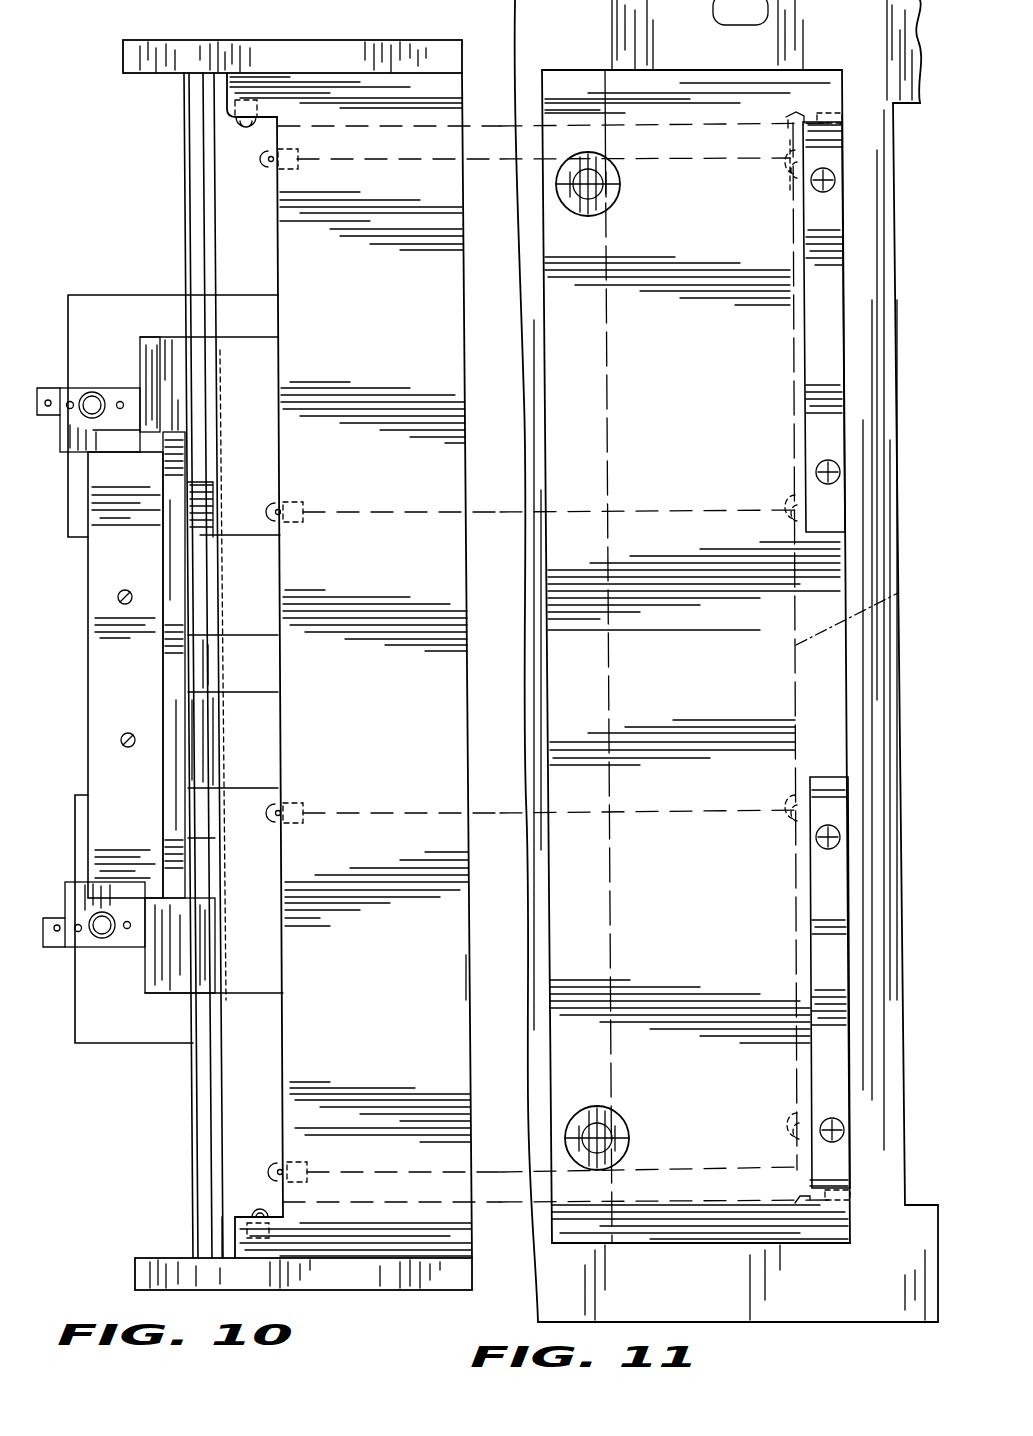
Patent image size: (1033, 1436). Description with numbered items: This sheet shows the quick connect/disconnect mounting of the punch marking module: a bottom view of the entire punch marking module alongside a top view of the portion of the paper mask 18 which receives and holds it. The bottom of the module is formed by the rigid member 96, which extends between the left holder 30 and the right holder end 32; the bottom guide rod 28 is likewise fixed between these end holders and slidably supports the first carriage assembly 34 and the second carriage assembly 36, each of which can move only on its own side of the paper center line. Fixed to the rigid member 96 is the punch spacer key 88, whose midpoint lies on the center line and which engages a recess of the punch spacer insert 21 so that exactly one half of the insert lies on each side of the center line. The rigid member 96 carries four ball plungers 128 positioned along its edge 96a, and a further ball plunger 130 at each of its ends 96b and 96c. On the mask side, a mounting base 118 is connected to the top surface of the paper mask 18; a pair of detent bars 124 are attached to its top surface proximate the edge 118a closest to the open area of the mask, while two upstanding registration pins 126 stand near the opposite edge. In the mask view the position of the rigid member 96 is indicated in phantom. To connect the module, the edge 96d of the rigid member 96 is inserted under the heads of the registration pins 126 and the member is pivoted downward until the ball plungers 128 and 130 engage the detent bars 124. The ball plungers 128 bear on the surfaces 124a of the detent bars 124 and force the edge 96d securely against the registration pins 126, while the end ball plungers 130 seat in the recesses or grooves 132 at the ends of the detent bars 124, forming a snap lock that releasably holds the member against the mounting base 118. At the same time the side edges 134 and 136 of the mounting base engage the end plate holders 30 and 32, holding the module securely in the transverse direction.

In FIG. 11, the paper mask 18 is at (575, 33).
In FIG. 10, the punch spacer insert 21 is at (88, 672).
In FIG. 10, the bottom guide rod 28 is at (200, 1113).
In FIG. 10, the left holder 30 is at (148, 1275).
In FIG. 10, the right holder end 32 is at (122, 62).
In FIG. 10, the first carriage assembly 34 is at (52, 290).
In FIG. 10, the second carriage assembly 36 is at (82, 1056).
In FIG. 10, the punch spacer key 88 is at (278, 673).
In FIG. 10, the rigid member 96 is at (412, 763).
In FIG. 10, the edge of rigid member 96a is at (278, 748).
In FIG. 11, the edge of rigid member 96a is at (872, 611).
In FIG. 10, the end of rigid member 96b is at (224, 1217).
In FIG. 11, the end of rigid member 96b is at (805, 1198).
In FIG. 10, the end of rigid member 96c is at (236, 112).
In FIG. 11, the end of rigid member 96c is at (795, 112).
In FIG. 10, the edge of rigid member 96d is at (470, 982).
In FIG. 11, the edge of rigid member 96d is at (612, 892).
In FIG. 11, the mounting base 118 is at (696, 664).
In FIG. 11, the edge of mounting base 118a is at (847, 686).
In FIG. 11, the detent bars 124 is at (833, 402).
In FIG. 11, the surfaces of detent bars 124a is at (803, 345).
In FIG. 11, the registration pins 126 is at (616, 205).
In FIG. 10, the ball plungers 128 is at (264, 165).
In FIG. 11, the ball plungers 128 is at (790, 190).
In FIG. 10, the ball plunger 130 is at (238, 118).
In FIG. 11, the ball plunger 130 is at (825, 110).
In FIG. 11, the recesses or grooves 132 is at (840, 128).
In FIG. 11, the side edge of mounting base 134 is at (650, 1243).
In FIG. 11, the side edge of mounting base 136 is at (555, 68).